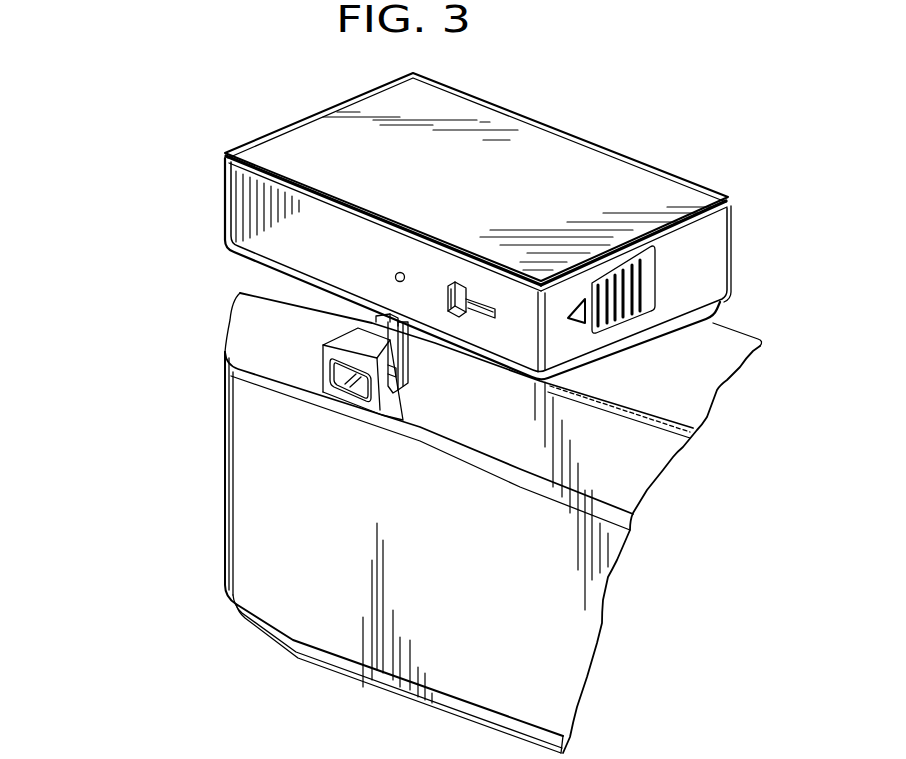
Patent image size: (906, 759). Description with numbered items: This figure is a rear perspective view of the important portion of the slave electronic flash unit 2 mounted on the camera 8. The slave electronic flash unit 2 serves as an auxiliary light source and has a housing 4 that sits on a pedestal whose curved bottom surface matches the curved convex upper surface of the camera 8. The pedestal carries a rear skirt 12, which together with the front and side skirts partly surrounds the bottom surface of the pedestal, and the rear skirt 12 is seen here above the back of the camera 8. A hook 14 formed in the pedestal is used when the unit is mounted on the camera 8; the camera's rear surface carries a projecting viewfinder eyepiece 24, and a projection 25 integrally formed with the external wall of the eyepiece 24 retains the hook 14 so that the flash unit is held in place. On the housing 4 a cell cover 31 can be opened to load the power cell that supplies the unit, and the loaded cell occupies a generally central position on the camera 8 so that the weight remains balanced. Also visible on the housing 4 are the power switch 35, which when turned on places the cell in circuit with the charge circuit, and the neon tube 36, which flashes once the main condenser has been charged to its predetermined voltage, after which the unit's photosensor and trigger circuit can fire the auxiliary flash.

The slave electronic flash unit 2 is at (530, 135).
The housing 4 is at (317, 127).
The camera 8 is at (198, 483).
The rear skirt 12 is at (296, 300).
The hook 14 is at (410, 373).
The eyepiece 24 is at (354, 410).
The projection 25 is at (390, 364).
The cell cover 31 is at (638, 253).
The power switch 35 is at (439, 287).
The neon tube 36 is at (400, 271).